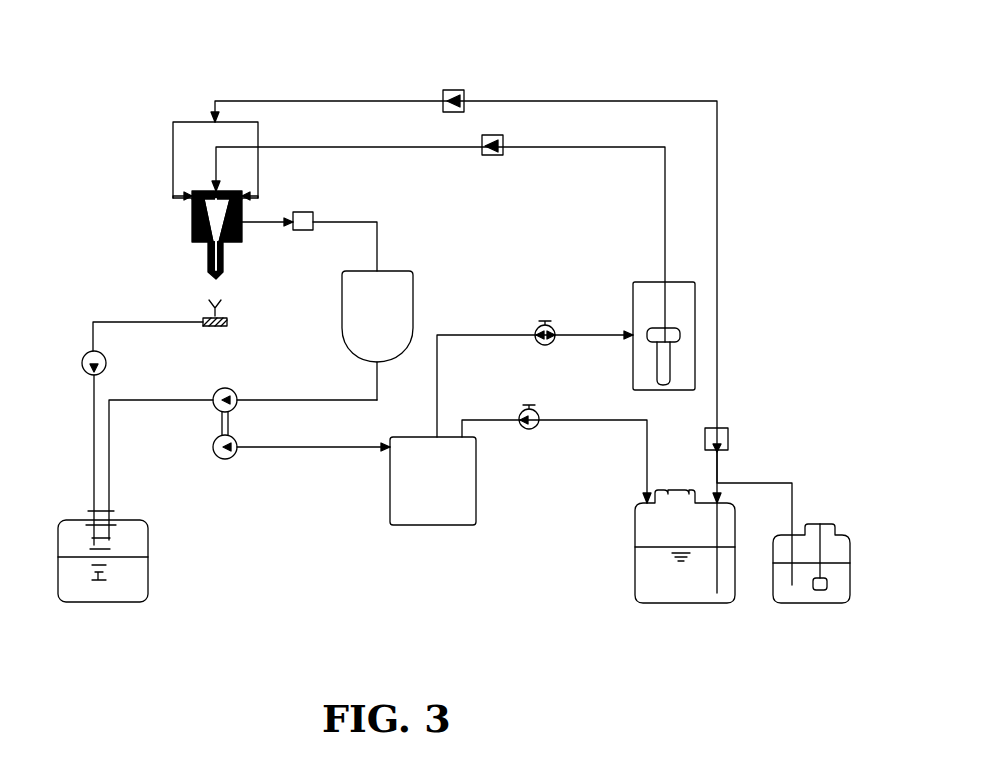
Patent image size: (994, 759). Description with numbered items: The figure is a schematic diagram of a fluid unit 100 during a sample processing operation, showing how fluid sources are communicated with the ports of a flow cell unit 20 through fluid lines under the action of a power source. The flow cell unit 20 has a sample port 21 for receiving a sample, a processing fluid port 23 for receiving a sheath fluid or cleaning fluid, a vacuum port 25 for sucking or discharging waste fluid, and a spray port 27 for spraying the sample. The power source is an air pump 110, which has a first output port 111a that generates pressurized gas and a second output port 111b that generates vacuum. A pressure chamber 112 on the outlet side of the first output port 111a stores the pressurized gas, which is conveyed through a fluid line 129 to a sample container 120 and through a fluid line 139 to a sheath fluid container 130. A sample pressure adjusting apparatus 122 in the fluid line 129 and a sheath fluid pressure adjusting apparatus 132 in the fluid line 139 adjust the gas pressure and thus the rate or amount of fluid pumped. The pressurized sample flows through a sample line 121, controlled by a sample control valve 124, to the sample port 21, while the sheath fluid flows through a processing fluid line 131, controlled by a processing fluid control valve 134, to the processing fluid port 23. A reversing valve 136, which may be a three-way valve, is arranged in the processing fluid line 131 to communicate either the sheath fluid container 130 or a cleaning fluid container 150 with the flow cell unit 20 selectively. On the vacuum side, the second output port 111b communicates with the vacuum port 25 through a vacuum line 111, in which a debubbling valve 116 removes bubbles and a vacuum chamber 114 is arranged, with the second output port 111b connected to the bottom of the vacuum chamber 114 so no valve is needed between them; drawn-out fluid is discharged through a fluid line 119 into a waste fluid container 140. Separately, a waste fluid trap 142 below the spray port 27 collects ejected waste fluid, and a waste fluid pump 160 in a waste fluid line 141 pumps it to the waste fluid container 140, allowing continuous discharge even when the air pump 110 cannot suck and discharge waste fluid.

The fluid unit 100 is at (624, 66).
The flow cell unit 20 is at (186, 255).
The sample port 21 is at (222, 189).
The processing fluid port 23 is at (190, 208).
The vacuum port 25 is at (246, 225).
The spray port 27 is at (229, 245).
The air pump 110 is at (215, 424).
The vacuum line 111 is at (322, 400).
The first output port 111a is at (225, 461).
The second output port 111b is at (229, 387).
The pressure chamber 112 is at (433, 481).
The vacuum chamber 114 is at (377, 335).
The debubbling valve 116 is at (309, 241).
The fluid line 119 is at (170, 398).
The sample container 120 is at (664, 336).
The sample line 121 is at (665, 205).
The sample pressure adjusting apparatus 122 is at (548, 319).
The sample control valve 124 is at (494, 159).
The fluid line 129 is at (483, 333).
The sheath fluid container 130 is at (685, 560).
The processing fluid line 131 is at (718, 150).
The sheath fluid pressure adjusting apparatus 132 is at (532, 425).
The processing fluid control valve 134 is at (459, 88).
The reversing valve 136 is at (737, 440).
The fluid line 139 is at (570, 422).
The waste fluid container 140 is at (103, 570).
The waste fluid line 141 is at (93, 446).
The waste fluid trap 142 is at (203, 322).
The cleaning fluid container 150 is at (811, 576).
The waste fluid pump 160 is at (75, 363).